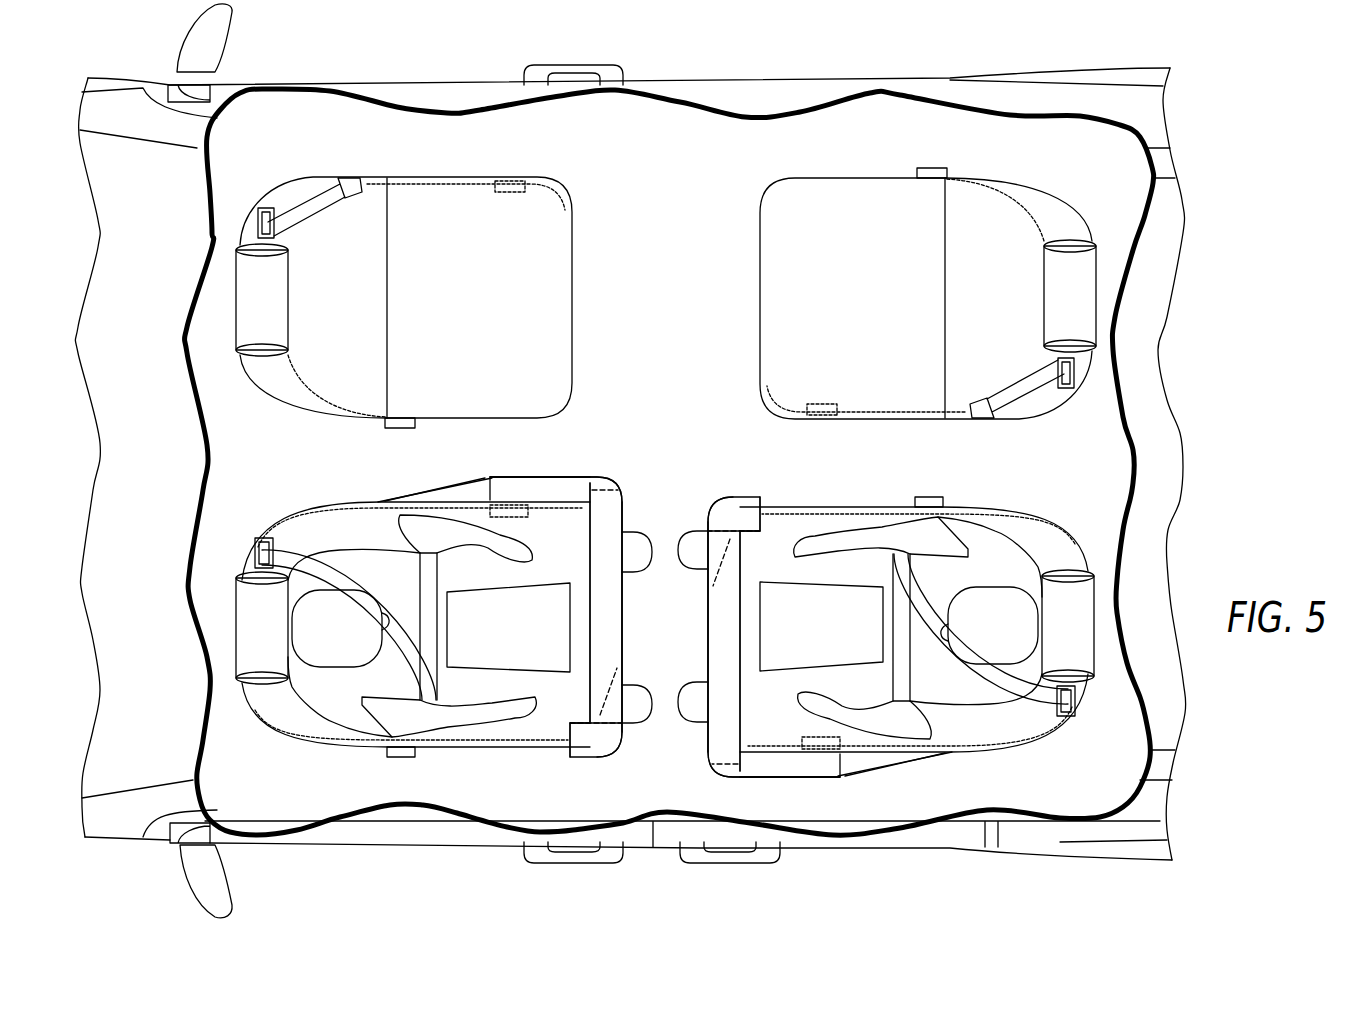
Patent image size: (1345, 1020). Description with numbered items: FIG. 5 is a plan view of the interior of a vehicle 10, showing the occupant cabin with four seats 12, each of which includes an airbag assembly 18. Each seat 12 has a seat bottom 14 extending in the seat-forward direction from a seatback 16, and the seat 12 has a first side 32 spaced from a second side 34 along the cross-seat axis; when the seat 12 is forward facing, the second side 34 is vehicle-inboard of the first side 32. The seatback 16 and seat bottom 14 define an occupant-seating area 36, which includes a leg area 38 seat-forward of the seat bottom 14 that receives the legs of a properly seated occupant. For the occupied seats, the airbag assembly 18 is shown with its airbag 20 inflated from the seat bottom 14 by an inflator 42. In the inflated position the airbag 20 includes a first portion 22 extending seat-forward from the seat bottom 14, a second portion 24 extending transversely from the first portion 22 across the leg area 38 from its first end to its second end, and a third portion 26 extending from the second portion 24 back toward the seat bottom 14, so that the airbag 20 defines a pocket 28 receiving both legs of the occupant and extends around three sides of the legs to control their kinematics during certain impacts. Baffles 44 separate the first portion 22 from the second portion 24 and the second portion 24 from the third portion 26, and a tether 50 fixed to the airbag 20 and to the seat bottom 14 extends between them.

The vehicle 10 is at (957, 50).
The seat 12 is at (590, 185).
The seat bottom 14 is at (555, 306).
The seatback 16 is at (330, 235).
The airbag assembly 18 is at (474, 198).
The airbag 20 is at (552, 488).
The first portion 22 is at (512, 488).
The second portion 24 is at (612, 630).
The third portion 26 is at (745, 500).
The pocket 28 is at (573, 620).
The first side 32 is at (400, 479).
The second side 34 is at (892, 479).
The occupant-seating area 36 is at (967, 240).
The leg area 38 is at (725, 330).
The inflator 42 is at (512, 180).
The baffle 44 is at (605, 486).
The tether 50 is at (480, 481).